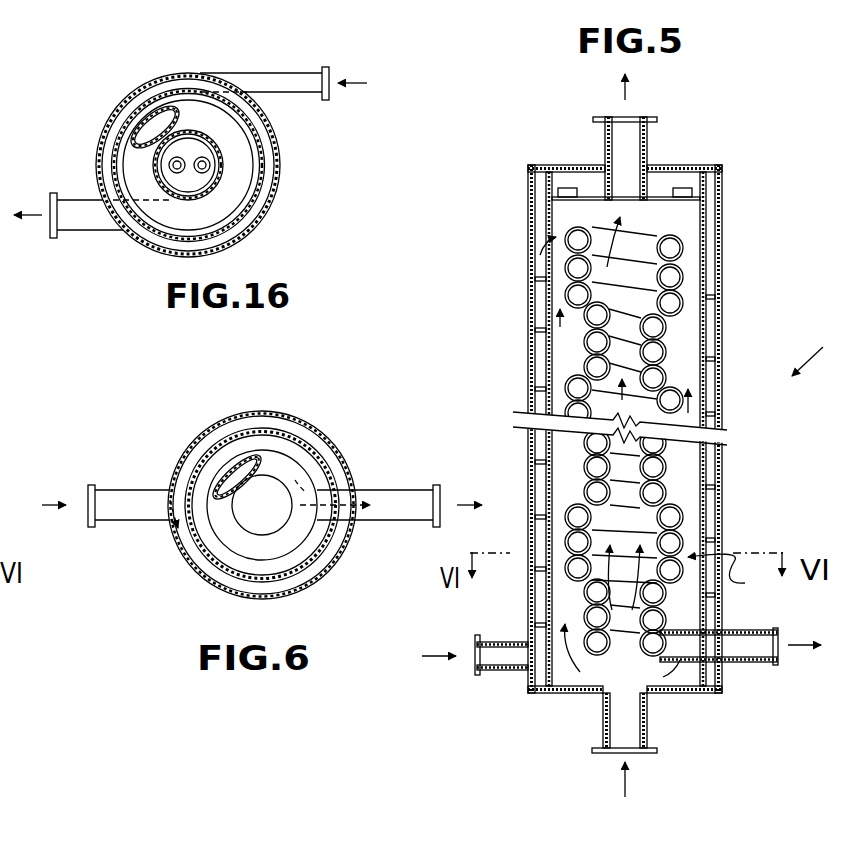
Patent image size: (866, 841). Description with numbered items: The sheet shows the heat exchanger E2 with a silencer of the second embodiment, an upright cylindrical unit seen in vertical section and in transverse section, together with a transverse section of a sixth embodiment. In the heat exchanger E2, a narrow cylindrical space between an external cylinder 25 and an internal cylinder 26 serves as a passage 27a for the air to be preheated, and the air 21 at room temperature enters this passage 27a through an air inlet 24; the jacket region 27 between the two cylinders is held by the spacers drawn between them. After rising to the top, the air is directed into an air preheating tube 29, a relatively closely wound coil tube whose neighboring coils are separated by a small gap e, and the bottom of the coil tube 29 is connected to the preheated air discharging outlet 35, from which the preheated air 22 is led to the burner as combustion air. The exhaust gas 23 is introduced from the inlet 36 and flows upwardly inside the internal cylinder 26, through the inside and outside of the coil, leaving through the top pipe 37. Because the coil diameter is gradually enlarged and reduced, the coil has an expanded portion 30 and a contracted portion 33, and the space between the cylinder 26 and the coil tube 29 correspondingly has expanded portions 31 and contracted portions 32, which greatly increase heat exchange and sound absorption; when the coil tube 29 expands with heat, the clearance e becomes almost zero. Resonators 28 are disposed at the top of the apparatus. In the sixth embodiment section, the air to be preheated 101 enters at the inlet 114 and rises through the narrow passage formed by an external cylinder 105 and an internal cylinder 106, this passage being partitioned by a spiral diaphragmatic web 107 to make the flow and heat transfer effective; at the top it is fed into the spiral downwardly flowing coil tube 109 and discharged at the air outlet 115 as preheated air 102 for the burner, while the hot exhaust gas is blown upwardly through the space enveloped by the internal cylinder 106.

In FIG. 5, the air at room temperature 21 is at (437, 677).
In FIG. 5, the preheated air 22 is at (808, 666).
In FIG. 5, the exhaust gas 23 is at (601, 781).
In FIG. 6, the air inlet 24 is at (143, 513).
In FIG. 5, the air inlet 24 is at (503, 683).
In FIG. 6, the external cylinder 25 is at (200, 433).
In FIG. 5, the external cylinder 25 is at (528, 240).
In FIG. 6, the internal cylinder 26 is at (235, 432).
In FIG. 5, the internal cylinder 26 is at (548, 300).
In FIG. 5, the annular space between shells 27 is at (532, 346).
In FIG. 5, the passage 27a is at (542, 368).
In FIG. 5, the resonators 28 is at (677, 180).
In FIG. 6, the air preheating tube 29 is at (288, 466).
In FIG. 5, the air preheating tube 29 is at (673, 243).
In FIG. 5, the expanded portion 30 is at (652, 216).
In FIG. 5, the expanded portions 31 is at (682, 372).
In FIG. 5, the contracted portions 32 is at (692, 270).
In FIG. 5, the contracted portion 33 is at (623, 348).
In FIG. 6, the preheated air discharging outlet 35 is at (380, 513).
In FIG. 5, the preheated air discharging outlet 35 is at (753, 663).
In FIG. 5, the inlet 36 is at (645, 719).
In FIG. 5, the top pipe 37 is at (605, 143).
In FIG. 5, the heat exchanger E2 is at (811, 346).
In FIG. 5, the gap e is at (722, 576).
In FIG. 16, the air to be preheated 101 is at (356, 71).
In FIG. 16, the preheated air 102 is at (33, 217).
In FIG. 16, the external cylinder 105 is at (136, 90).
In FIG. 16, the internal cylinder 106 is at (113, 167).
In FIG. 16, the spiral diaphragmatic web 107 is at (117, 122).
In FIG. 16, the coil tube 109 is at (240, 153).
In FIG. 16, the inlet 114 is at (255, 80).
In FIG. 16, the air outlet 115 is at (91, 222).